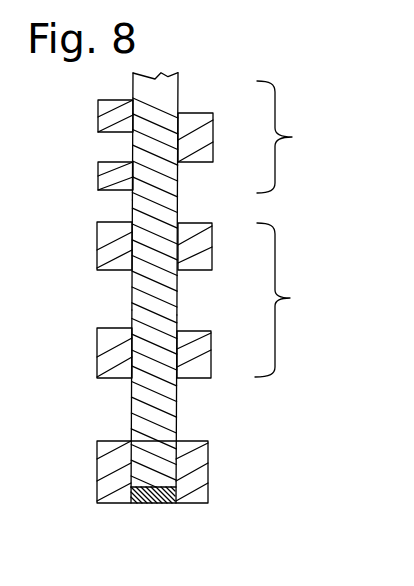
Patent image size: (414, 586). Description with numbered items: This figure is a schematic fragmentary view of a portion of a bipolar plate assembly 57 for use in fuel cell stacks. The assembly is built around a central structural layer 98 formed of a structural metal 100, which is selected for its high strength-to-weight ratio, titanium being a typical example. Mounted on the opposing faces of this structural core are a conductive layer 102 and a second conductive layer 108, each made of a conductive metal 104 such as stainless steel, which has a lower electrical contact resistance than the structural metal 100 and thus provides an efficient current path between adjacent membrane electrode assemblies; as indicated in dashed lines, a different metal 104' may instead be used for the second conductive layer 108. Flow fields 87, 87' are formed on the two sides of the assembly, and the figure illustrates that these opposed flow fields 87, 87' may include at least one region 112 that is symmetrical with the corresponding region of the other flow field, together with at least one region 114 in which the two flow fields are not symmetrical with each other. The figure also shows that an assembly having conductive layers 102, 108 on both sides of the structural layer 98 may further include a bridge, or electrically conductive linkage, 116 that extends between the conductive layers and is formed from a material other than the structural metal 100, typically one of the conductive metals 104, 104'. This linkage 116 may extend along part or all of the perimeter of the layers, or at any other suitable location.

The bipolar plate assembly 57 is at (63, 120).
The structural layer 98 is at (181, 85).
The conductive layer 102 is at (97, 175).
The second conductive layer 108 is at (217, 138).
The region 114 is at (298, 137).
The flow field 87 is at (111, 276).
The flow field 87' is at (215, 255).
The region 112 is at (217, 300).
The structural metal 100 is at (168, 392).
The conductive metal 104 is at (151, 467).
The different metal 104' is at (206, 484).
The linkage 116 is at (140, 510).